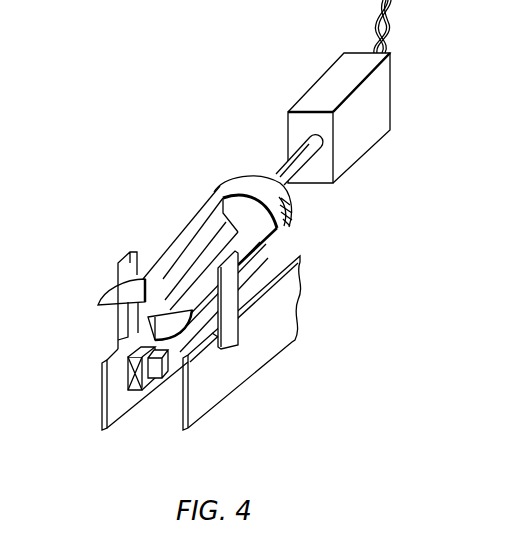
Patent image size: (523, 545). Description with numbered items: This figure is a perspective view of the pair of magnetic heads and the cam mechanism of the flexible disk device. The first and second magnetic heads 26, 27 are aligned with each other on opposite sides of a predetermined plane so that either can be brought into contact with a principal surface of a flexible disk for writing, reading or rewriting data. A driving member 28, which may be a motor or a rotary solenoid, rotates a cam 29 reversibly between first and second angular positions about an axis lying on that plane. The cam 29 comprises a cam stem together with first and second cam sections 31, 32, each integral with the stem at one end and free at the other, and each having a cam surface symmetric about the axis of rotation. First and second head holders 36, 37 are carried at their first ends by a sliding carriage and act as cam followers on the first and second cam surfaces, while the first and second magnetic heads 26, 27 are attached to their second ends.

The first magnetic head 26 is at (182, 384).
The second magnetic head 27 is at (157, 382).
The driving member 28 is at (320, 77).
The cam 29 is at (222, 170).
The first cam section 31 is at (283, 243).
The second cam section 32 is at (177, 223).
The first head holder 36 is at (290, 342).
The second head holder 37 is at (100, 397).